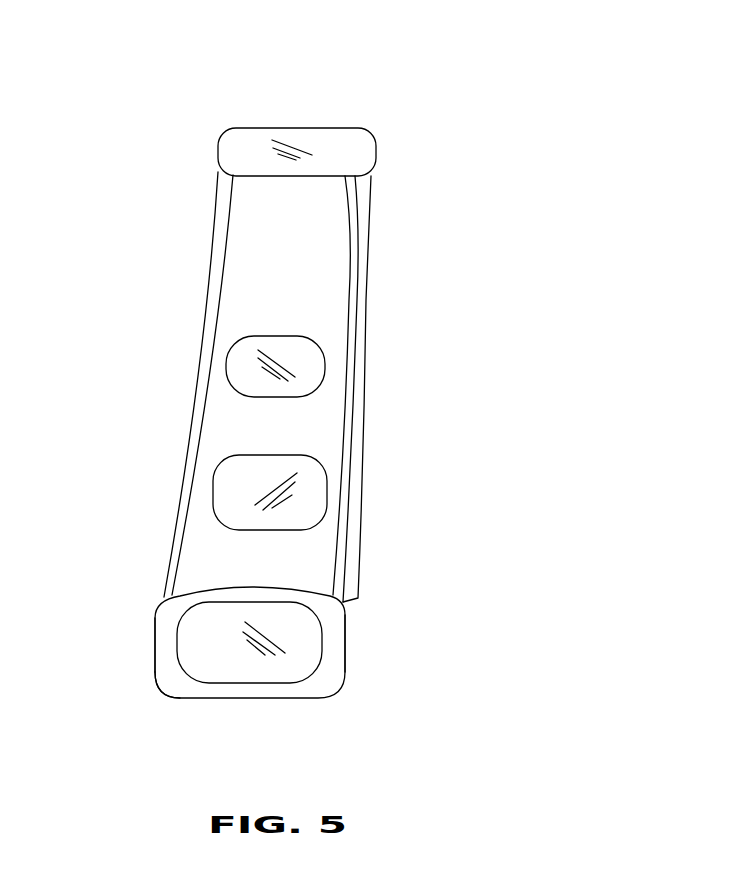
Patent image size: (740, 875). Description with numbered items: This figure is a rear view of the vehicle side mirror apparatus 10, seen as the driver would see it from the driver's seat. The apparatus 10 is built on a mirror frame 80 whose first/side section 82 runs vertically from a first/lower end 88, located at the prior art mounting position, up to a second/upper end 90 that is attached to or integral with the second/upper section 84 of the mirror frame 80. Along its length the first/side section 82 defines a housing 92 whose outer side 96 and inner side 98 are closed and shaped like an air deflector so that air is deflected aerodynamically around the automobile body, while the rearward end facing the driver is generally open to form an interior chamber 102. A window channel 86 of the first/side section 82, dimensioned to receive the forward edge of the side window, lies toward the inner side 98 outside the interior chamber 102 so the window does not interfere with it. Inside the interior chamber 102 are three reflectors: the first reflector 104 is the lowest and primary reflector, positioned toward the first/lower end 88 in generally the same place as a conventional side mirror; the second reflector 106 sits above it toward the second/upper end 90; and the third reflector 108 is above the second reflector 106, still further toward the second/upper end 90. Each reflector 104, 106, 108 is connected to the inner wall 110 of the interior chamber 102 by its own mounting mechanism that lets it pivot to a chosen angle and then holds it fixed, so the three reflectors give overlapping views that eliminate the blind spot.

The vehicle side mirror apparatus 10 is at (545, 170).
The mirror frame 80 is at (215, 198).
The first/side section 82 is at (210, 263).
The second/upper section 84 is at (303, 128).
The window channel 86 is at (362, 322).
The first/lower end 88 is at (348, 700).
The second/upper end 90 is at (385, 175).
The housing 92 is at (165, 680).
The outer side 96 is at (155, 648).
The inner side 98 is at (348, 645).
The interior chamber 102 is at (237, 556).
The first reflector 104 is at (228, 653).
The second reflector 106 is at (243, 492).
The third reflector 108 is at (240, 368).
The inner wall 110 is at (307, 296).